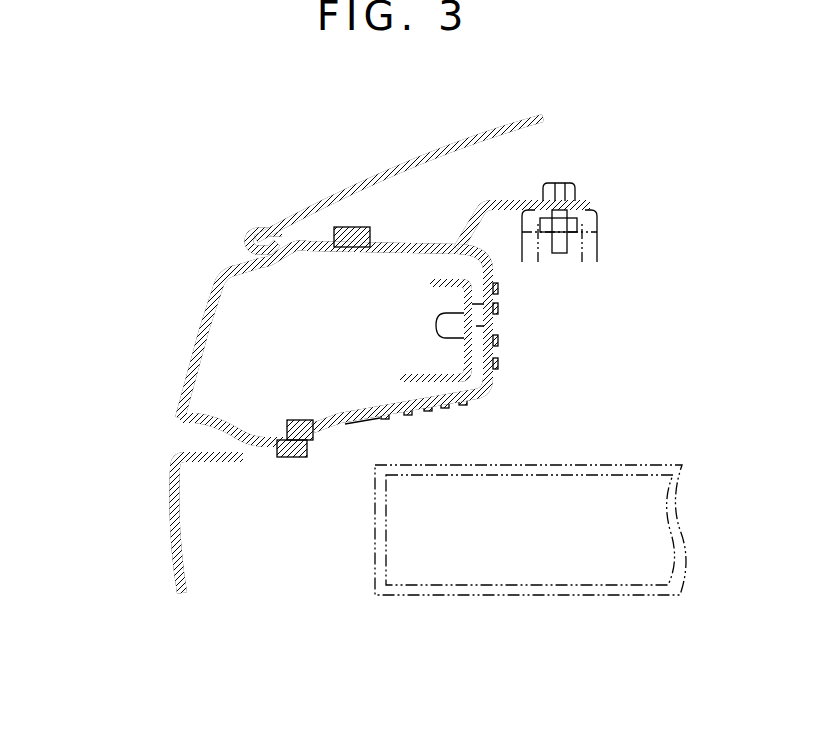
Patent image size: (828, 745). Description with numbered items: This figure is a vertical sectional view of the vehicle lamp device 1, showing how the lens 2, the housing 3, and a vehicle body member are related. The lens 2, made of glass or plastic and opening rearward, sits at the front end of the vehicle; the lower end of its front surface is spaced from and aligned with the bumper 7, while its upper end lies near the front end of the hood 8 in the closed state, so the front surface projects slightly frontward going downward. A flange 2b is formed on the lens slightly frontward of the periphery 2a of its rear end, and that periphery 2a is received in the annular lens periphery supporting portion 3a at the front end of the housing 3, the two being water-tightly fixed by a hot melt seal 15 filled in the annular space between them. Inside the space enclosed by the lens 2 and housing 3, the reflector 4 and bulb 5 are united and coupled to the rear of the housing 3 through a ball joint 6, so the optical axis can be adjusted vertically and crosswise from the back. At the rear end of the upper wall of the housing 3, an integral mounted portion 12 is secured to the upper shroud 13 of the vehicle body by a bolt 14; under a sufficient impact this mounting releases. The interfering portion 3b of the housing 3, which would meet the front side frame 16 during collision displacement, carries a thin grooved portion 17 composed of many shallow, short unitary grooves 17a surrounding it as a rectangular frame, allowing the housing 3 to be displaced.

The vehicle lamp device 1 is at (172, 247).
The lens 2 is at (200, 345).
The periphery of rear end of the lens 2a is at (355, 226).
The flange 2b is at (333, 236).
The housing 3 is at (352, 432).
The lens periphery supporting portion 3a is at (302, 459).
The interfering portion 3b is at (385, 430).
The reflector 4 is at (415, 373).
The bulb 5 is at (437, 325).
The ball joint 6 is at (478, 320).
The bumper 7 is at (170, 548).
The hood 8 is at (453, 146).
The mounted portion 12 is at (514, 200).
The upper shroud 13 is at (598, 236).
The bolt 14 is at (560, 184).
The hot melt seal 15 is at (300, 420).
The front side frame 16 is at (637, 465).
The thin grooved portion 17 is at (502, 386).
The unitary grooves 17a is at (494, 372).